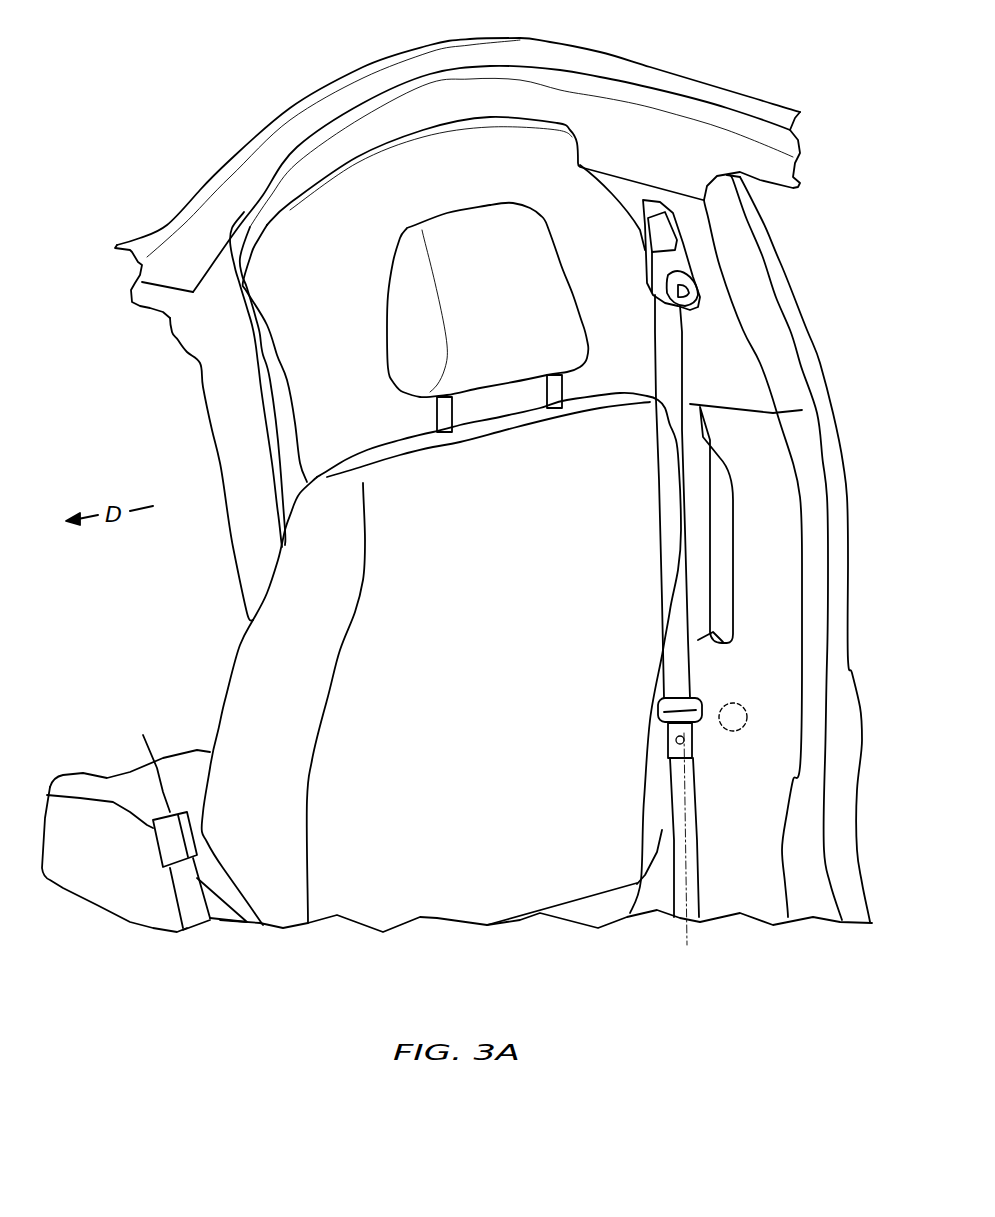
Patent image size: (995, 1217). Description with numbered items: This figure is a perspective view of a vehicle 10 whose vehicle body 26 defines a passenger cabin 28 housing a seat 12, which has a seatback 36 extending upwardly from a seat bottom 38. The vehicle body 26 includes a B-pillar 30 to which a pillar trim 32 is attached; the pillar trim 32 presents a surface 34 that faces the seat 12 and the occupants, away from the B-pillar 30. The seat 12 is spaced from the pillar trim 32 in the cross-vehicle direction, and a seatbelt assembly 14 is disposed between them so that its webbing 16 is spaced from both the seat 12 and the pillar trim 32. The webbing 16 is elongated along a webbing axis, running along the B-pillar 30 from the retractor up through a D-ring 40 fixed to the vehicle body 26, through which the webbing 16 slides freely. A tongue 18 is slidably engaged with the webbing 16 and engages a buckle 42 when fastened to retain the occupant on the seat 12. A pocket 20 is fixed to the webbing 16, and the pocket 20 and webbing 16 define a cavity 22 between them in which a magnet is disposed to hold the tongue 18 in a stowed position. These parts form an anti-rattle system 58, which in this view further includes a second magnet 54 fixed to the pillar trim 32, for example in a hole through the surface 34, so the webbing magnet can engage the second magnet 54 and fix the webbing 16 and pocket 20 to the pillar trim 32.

The vehicle 10 is at (88, 78).
The seat 12 is at (222, 682).
The seatbelt assembly 14 is at (591, 236).
The webbing 16 is at (693, 607).
The tongue 18 is at (693, 703).
The pocket 20 is at (688, 763).
The cavity 22 is at (686, 744).
The vehicle body 26 is at (290, 107).
The passenger cabin 28 is at (90, 332).
The B-pillar 30 is at (792, 288).
The pillar trim 32 is at (797, 463).
The surface 34 is at (776, 507).
The seatback 36 is at (367, 450).
The seat bottom 38 is at (93, 773).
The D-ring 40 is at (703, 302).
The buckle 42 is at (148, 745).
The second magnet 54 is at (745, 705).
The anti-rattle system 58 is at (656, 756).